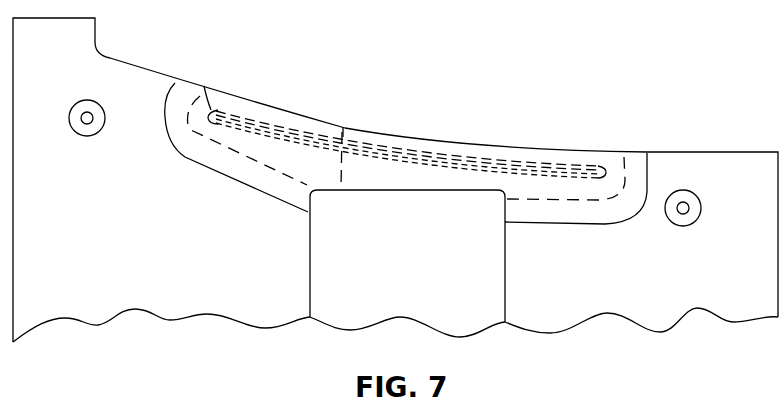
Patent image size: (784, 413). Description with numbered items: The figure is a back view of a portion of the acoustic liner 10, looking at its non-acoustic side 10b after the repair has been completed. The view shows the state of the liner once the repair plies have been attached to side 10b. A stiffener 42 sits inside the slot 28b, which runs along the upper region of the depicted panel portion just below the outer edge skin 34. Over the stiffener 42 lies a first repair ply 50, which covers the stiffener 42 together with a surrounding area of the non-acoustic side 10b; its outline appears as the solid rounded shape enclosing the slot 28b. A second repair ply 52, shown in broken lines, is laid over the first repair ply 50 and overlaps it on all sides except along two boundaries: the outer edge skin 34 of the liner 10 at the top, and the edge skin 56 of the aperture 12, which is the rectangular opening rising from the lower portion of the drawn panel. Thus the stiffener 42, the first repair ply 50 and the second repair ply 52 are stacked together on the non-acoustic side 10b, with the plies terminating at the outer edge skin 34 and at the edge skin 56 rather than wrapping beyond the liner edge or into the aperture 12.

The liner 10 is at (553, 90).
The non-acoustic side 10b is at (152, 243).
The aperture 12 is at (478, 261).
The slot 28b is at (608, 160).
The outer edge skin 34 is at (320, 119).
The stiffener 42 is at (462, 158).
The repair ply 50 is at (207, 79).
The repair ply 52 is at (183, 97).
The edge skin 56 is at (400, 191).